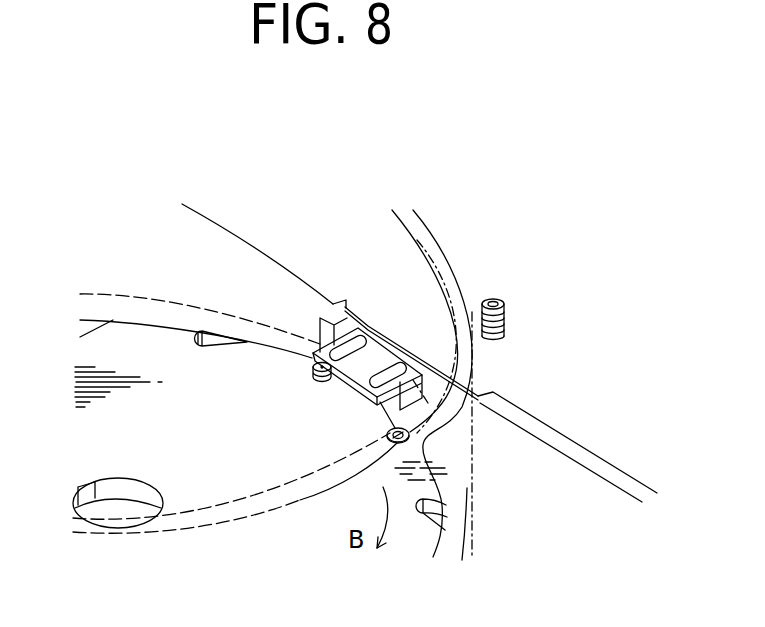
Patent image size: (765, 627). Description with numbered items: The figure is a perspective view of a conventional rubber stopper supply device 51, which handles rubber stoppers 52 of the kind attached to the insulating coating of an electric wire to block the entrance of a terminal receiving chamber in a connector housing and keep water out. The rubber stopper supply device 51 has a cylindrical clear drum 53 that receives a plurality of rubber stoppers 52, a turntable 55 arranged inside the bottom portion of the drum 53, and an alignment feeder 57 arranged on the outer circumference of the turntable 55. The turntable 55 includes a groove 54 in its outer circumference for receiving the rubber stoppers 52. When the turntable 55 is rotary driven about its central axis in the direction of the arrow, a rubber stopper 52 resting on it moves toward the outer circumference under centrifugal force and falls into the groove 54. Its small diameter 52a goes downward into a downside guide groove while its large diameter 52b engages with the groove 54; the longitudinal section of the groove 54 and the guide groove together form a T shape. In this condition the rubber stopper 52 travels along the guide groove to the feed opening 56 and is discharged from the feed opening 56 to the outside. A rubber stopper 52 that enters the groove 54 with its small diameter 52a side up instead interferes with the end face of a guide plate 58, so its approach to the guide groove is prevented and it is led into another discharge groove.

The rubber stopper supply device 51 is at (492, 145).
The rubber stopper 52 is at (507, 312).
The small diameter 52a is at (505, 337).
The large diameter 52b is at (503, 300).
The drum 53 is at (430, 220).
The groove 54 is at (212, 338).
The turntable 55 is at (160, 343).
The feed opening 56 is at (374, 320).
The alignment feeder 57 is at (302, 290).
The guide plate 58 is at (355, 388).